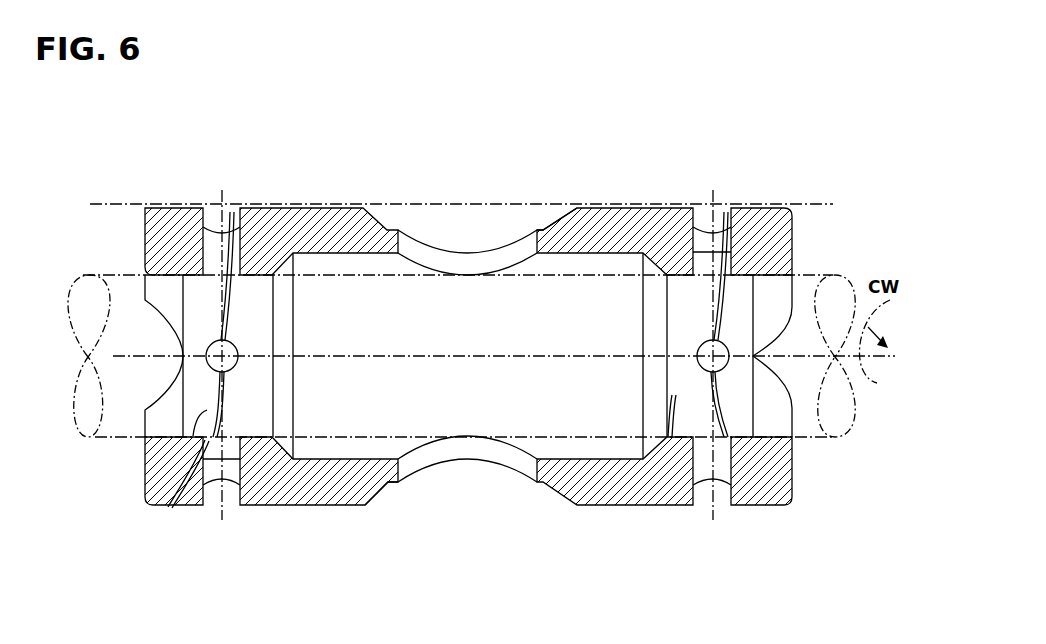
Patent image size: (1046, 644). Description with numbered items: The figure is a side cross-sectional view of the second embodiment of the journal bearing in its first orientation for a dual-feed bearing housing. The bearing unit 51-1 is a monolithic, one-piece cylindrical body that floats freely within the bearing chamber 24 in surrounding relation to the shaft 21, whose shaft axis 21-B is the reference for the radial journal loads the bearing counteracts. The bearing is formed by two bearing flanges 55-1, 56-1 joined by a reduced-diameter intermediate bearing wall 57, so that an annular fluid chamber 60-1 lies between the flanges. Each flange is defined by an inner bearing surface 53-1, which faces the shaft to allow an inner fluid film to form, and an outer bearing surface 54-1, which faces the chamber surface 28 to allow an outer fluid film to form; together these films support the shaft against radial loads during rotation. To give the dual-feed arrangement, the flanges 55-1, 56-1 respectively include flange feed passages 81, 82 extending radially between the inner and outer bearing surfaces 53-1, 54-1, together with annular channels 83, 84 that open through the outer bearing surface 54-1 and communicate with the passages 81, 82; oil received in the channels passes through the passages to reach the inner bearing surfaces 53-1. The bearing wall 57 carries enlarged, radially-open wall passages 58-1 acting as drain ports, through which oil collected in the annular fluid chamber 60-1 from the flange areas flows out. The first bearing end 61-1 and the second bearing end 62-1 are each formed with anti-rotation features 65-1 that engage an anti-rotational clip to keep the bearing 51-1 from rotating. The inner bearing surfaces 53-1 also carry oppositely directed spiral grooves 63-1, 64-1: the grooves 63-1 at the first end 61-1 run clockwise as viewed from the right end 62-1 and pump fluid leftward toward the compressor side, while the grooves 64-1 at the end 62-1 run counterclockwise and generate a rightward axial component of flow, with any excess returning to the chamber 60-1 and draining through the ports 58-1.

The shaft 21 is at (110, 305).
The shaft axis 21-B is at (125, 357).
The bearing chamber 24 is at (518, 219).
The chamber surface 28 is at (435, 203).
The bearing unit 51-1 is at (472, 184).
The inner bearing surfaces 53-1 is at (200, 303).
The outer bearing surfaces 54-1 is at (270, 208).
The bearing flange 55-1 is at (193, 492).
The bearing flange 56-1 is at (773, 497).
The bearing wall 57 is at (377, 481).
The wall passages 58-1 is at (468, 260).
The annular fluid chamber 60-1 is at (358, 446).
The first bearing end 61-1 is at (140, 196).
The second bearing end 62-1 is at (767, 156).
The spiral grooves 63-1 is at (168, 507).
The spiral grooves 64-1 is at (720, 300).
The anti-rotation features 65-1 is at (150, 388).
The flange feed passage 81 is at (231, 210).
The flange feed passage 82 is at (729, 212).
The annular channel 83 is at (212, 208).
The annular channel 84 is at (722, 214).